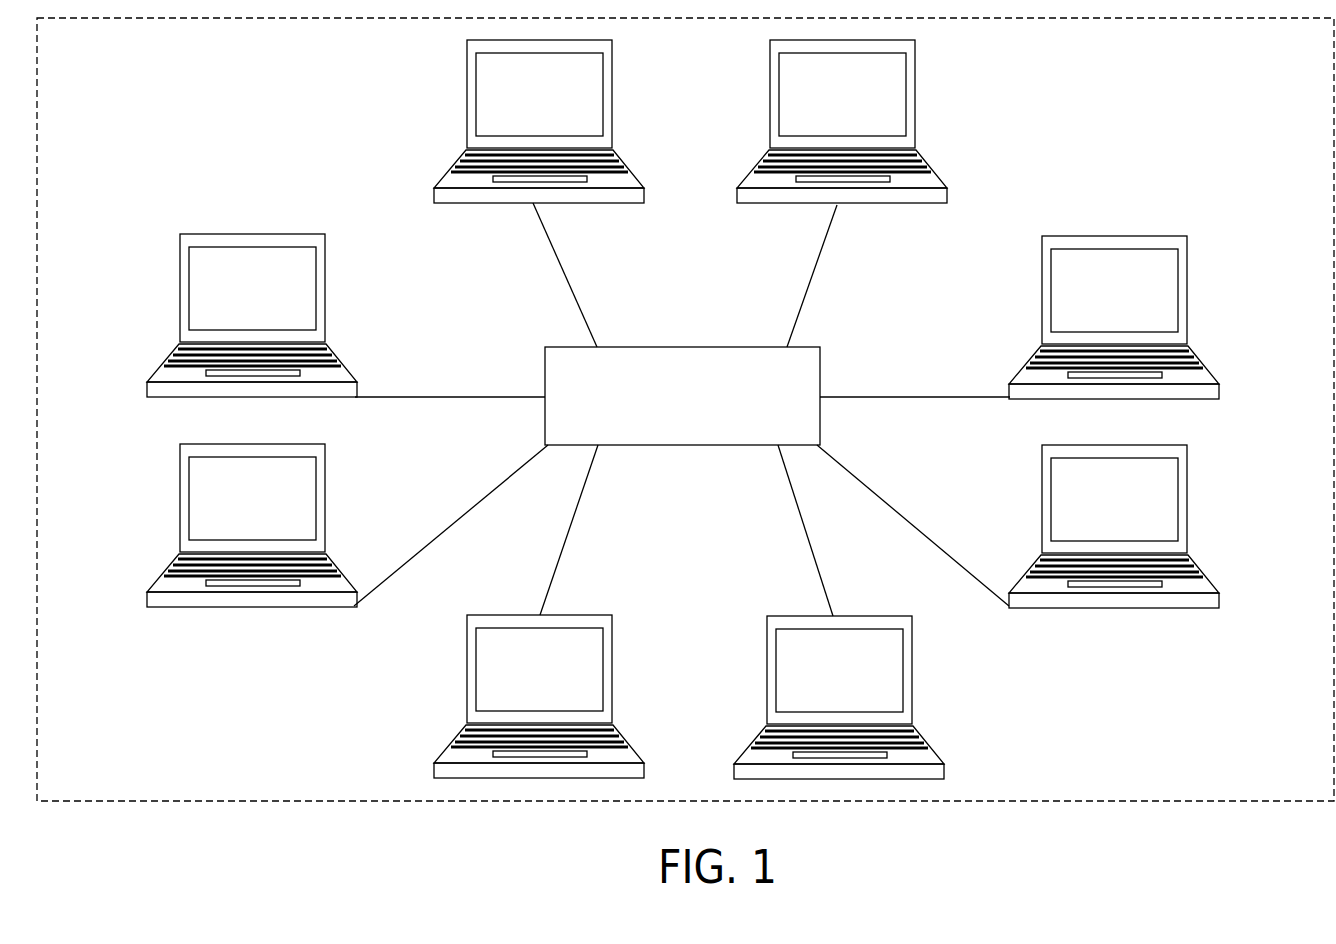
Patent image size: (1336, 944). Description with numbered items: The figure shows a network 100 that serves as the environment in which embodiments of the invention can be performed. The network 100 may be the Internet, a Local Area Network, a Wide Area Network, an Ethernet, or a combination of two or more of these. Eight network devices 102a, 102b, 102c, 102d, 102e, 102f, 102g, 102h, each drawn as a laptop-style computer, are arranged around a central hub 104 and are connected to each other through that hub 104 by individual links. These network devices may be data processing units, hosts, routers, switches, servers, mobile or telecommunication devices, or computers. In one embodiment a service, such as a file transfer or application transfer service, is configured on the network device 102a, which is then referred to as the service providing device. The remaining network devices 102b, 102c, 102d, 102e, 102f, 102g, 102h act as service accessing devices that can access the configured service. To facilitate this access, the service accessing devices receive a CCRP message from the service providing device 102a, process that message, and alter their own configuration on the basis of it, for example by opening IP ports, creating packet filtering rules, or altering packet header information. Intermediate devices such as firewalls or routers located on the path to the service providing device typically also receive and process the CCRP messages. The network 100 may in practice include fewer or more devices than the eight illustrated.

The network 100 is at (146, 813).
The network device (service providing device) 102a is at (467, 90).
The network device (service accessing device) 102b is at (770, 91).
The network device (service accessing device) 102c is at (1187, 303).
The network device (service accessing device) 102d is at (1187, 512).
The network device (service accessing device) 102e is at (912, 689).
The network device (service accessing device) 102f is at (467, 697).
The network device (service accessing device) 102g is at (180, 545).
The network device (service accessing device) 102h is at (180, 297).
The hub 104 is at (669, 445).